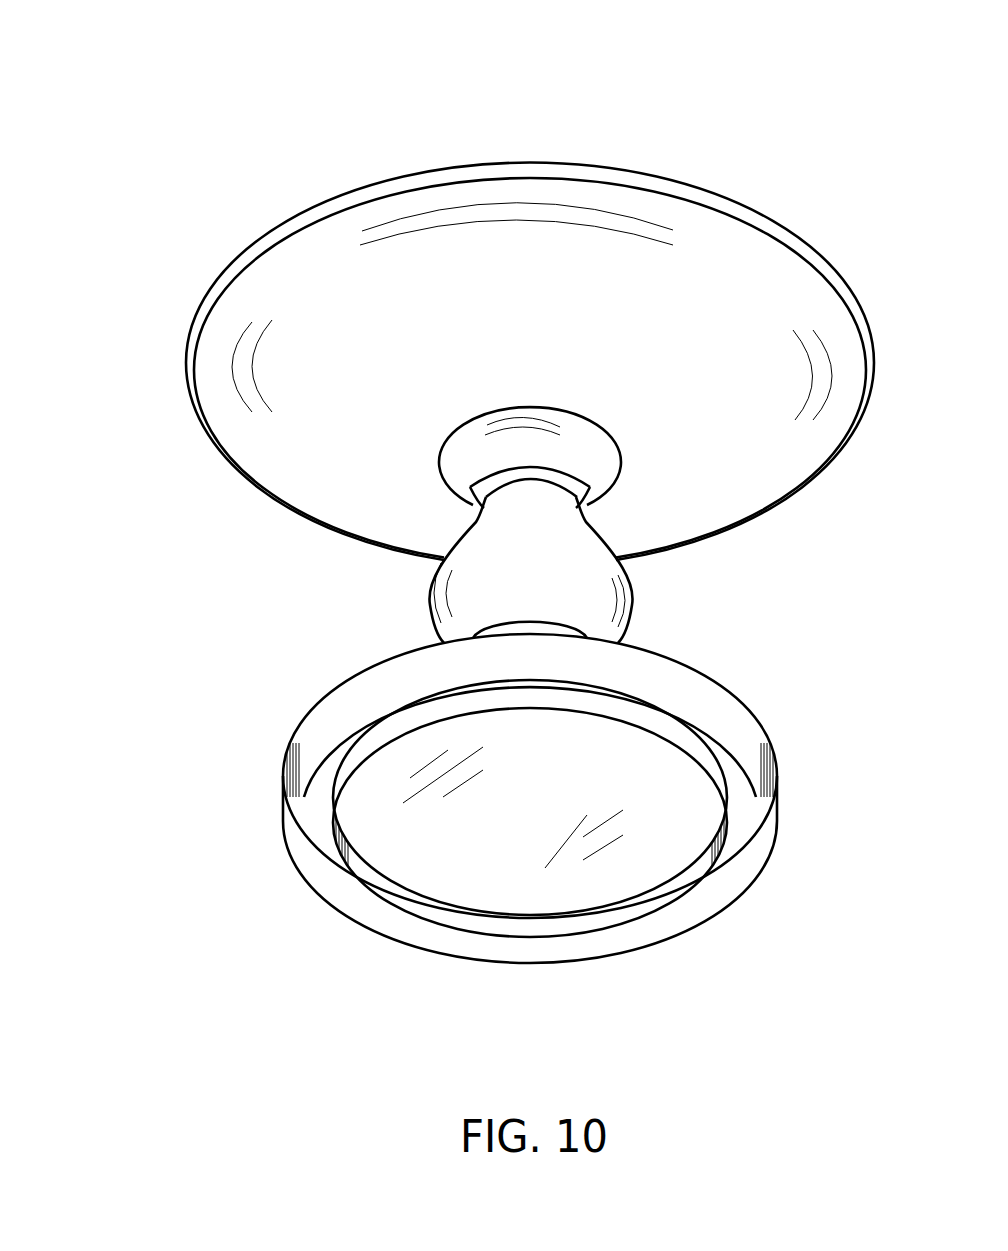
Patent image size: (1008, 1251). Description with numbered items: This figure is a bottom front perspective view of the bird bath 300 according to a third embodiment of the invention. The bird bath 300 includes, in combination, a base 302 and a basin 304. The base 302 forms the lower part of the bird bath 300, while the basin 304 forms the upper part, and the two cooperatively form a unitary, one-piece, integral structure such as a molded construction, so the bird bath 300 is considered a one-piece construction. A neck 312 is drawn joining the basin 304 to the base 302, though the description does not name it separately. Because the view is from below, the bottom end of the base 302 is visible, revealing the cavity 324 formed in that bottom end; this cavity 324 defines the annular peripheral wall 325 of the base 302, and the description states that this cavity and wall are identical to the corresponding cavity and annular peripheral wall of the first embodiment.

The bird bath 300 is at (772, 118).
The basin 304 is at (238, 512).
The neck 312 is at (646, 613).
The base 302 is at (274, 689).
The annular peripheral wall 325 is at (312, 840).
The cavity 324 is at (535, 802).